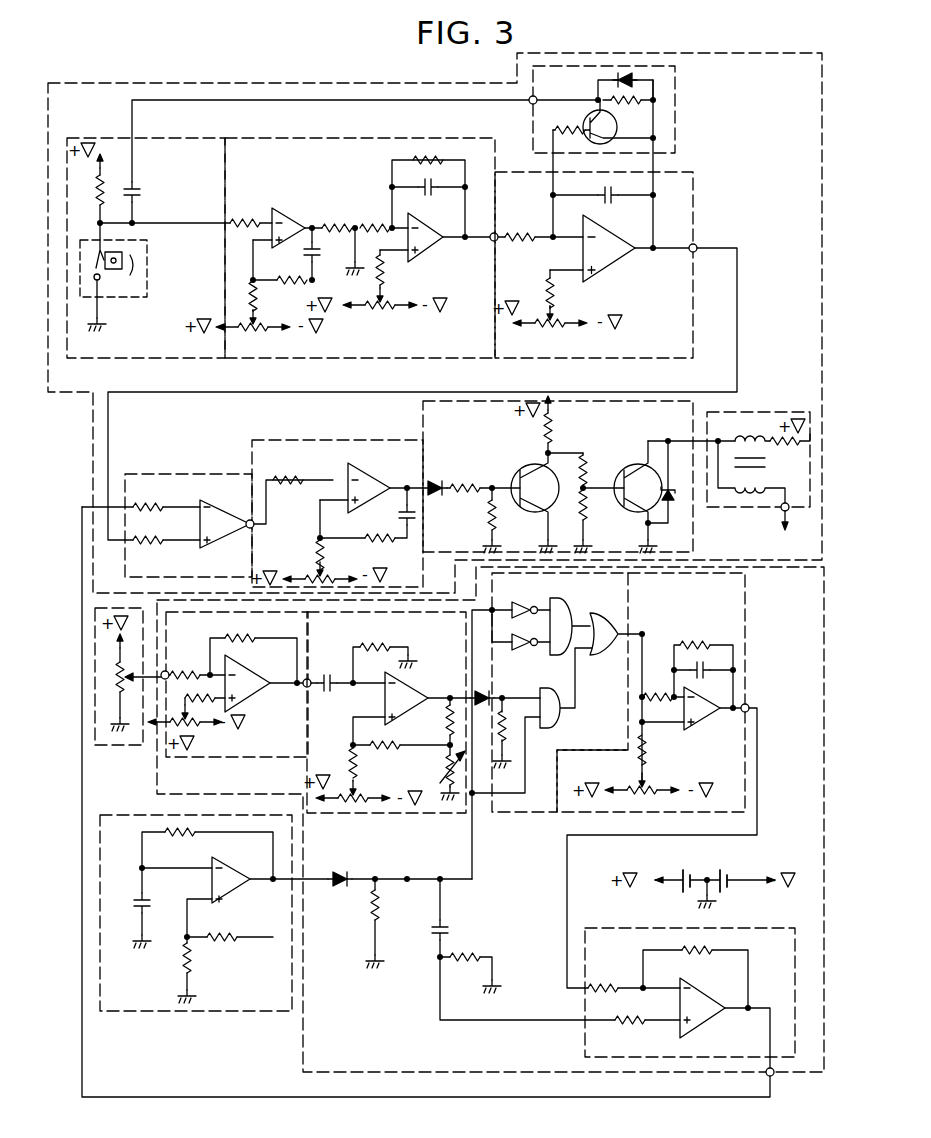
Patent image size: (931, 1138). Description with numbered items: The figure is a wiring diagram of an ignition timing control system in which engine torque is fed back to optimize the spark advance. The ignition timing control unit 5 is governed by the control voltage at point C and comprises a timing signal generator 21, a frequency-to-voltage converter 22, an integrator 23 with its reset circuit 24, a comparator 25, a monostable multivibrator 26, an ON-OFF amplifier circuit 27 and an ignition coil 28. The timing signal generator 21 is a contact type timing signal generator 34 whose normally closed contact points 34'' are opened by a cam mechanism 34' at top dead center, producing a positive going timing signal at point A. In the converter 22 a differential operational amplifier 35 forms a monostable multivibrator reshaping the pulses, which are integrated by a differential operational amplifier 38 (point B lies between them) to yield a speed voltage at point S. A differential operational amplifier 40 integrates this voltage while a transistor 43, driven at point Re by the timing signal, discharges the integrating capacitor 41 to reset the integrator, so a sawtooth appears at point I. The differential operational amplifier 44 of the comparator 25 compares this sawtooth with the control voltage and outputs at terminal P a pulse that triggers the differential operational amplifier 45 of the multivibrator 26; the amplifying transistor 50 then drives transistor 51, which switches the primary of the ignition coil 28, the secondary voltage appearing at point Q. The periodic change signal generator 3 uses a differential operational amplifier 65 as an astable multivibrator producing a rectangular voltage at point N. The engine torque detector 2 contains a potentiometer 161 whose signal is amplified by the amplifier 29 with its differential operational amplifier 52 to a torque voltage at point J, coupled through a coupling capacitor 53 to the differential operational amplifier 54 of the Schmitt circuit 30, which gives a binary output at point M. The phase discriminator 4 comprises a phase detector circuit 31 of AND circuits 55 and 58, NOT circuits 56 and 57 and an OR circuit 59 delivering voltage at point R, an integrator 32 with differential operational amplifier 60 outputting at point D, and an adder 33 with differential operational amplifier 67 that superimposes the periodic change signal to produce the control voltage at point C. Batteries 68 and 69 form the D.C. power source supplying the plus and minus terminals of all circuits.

The ignition timing control unit 5 is at (354, 83).
The timing signal generator 21 is at (188, 360).
The frequency-to-voltage converter 22 is at (418, 358).
The integrator 23 is at (638, 358).
The reset circuit 24 is at (676, 128).
The comparator 25 is at (180, 474).
The monostable multivibrator 26 is at (262, 440).
The ON-OFF amplifier circuit 27 is at (422, 403).
The ignition coil 28 is at (708, 507).
The amplifier 29 is at (278, 758).
The Schmitt circuit 30 is at (402, 815).
The phase detector circuit 31 is at (505, 813).
The integrator 32 is at (745, 611).
The adder 33 is at (585, 1037).
The engine torque detector 2 is at (141, 747).
The periodic change signal generator 3 is at (208, 1011).
The phase discriminator 4 is at (303, 1056).
The contact type timing signal generator 34 is at (139, 268).
The cam mechanism 34' is at (155, 283).
The contact points 34'' is at (122, 276).
The differential operational amplifier 35 is at (294, 220).
The differential operational amplifier 38 is at (432, 248).
The differential operational amplifier 40 is at (606, 262).
The integrating capacitor 41 is at (612, 193).
The transistor 43 is at (584, 122).
The differential operational amplifier 44 is at (222, 538).
The differential operational amplifier 45 is at (372, 496).
The amplifying transistor 50 is at (522, 472).
The transistor 51 is at (630, 470).
The differential operational amplifier 52 is at (250, 690).
The coupling capacitor 53 is at (331, 690).
The differential operational amplifier 54 is at (415, 690).
The AND circuit 55 is at (560, 722).
The NOT circuit 56 is at (528, 603).
The NOT circuit 57 is at (523, 650).
The AND circuit 58 is at (570, 615).
The OR circuit 59 is at (604, 616).
The differential operational amplifier 60 is at (708, 718).
The differential operational amplifier 65 is at (242, 888).
The differential operational amplifier 67 is at (708, 1020).
The D.C. power source 68 is at (686, 870).
The D.C. power source 69 is at (722, 870).
The potentiometer 161 is at (116, 678).
The point A is at (136, 221).
The point B is at (355, 224).
The point S is at (492, 232).
The point I is at (690, 252).
The point Re is at (531, 104).
The output terminal P is at (248, 520).
The point Q is at (783, 511).
The point J is at (309, 680).
The point M is at (498, 702).
The output point R is at (645, 633).
The point D is at (748, 704).
The point N is at (407, 883).
The point C is at (775, 1075).